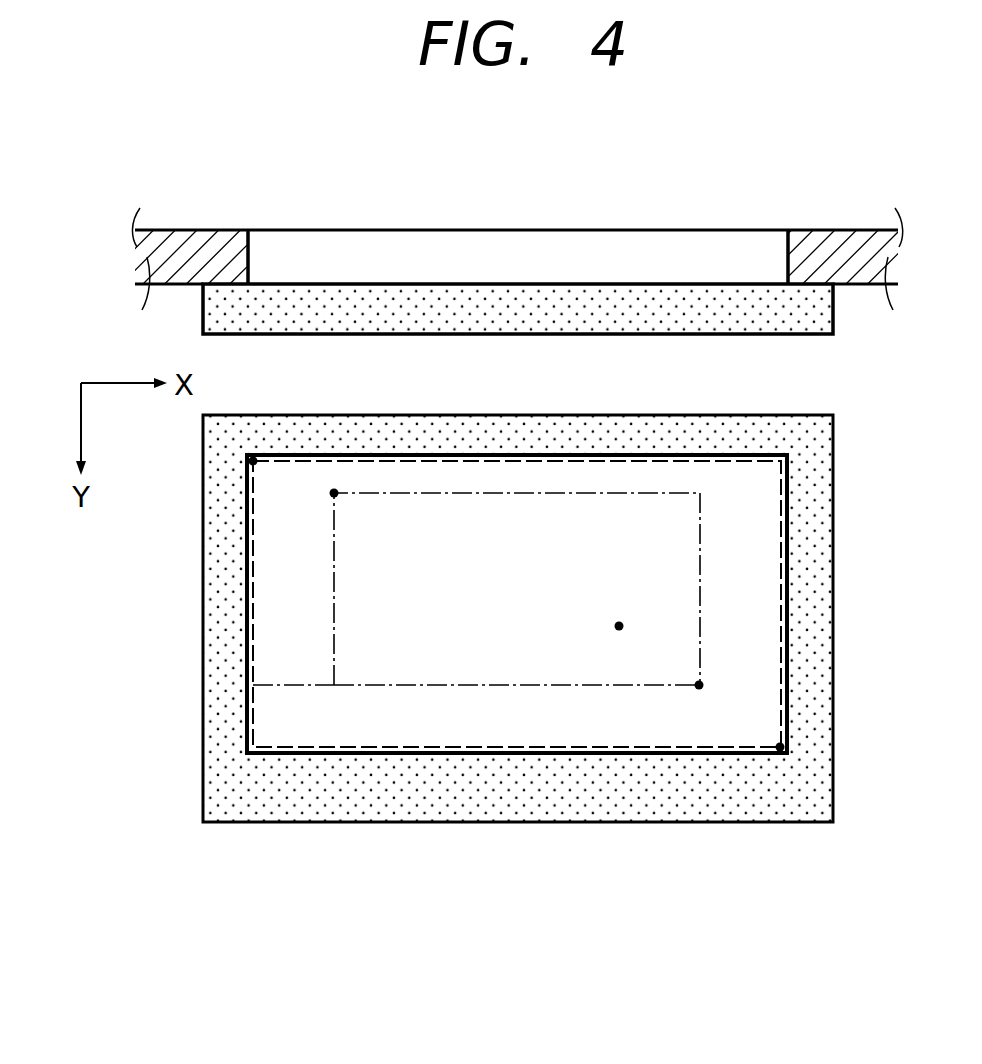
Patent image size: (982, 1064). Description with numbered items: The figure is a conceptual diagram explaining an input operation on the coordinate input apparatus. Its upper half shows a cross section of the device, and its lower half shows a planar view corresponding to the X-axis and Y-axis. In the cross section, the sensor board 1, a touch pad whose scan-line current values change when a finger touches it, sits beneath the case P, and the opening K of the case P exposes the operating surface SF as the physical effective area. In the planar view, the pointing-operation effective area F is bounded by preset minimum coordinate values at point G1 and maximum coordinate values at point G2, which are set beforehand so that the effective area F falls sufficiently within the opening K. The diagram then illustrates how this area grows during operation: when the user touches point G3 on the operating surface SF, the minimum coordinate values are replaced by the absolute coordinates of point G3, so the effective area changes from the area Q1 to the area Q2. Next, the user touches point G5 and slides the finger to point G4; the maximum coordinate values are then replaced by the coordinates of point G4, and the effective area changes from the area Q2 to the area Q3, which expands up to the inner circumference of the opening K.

The sensor board 1 is at (833, 316).
The case P is at (187, 243).
The opening K is at (250, 250).
The effective area F is at (700, 611).
The operating surface SF is at (700, 730).
The effective area Q1 is at (425, 686).
The effective area Q2 is at (305, 687).
The effective area Q3 is at (781, 530).
The point G1 is at (332, 498).
The point G2 is at (694, 690).
The point G3 is at (258, 465).
The point G4 is at (777, 744).
The point G5 is at (619, 622).